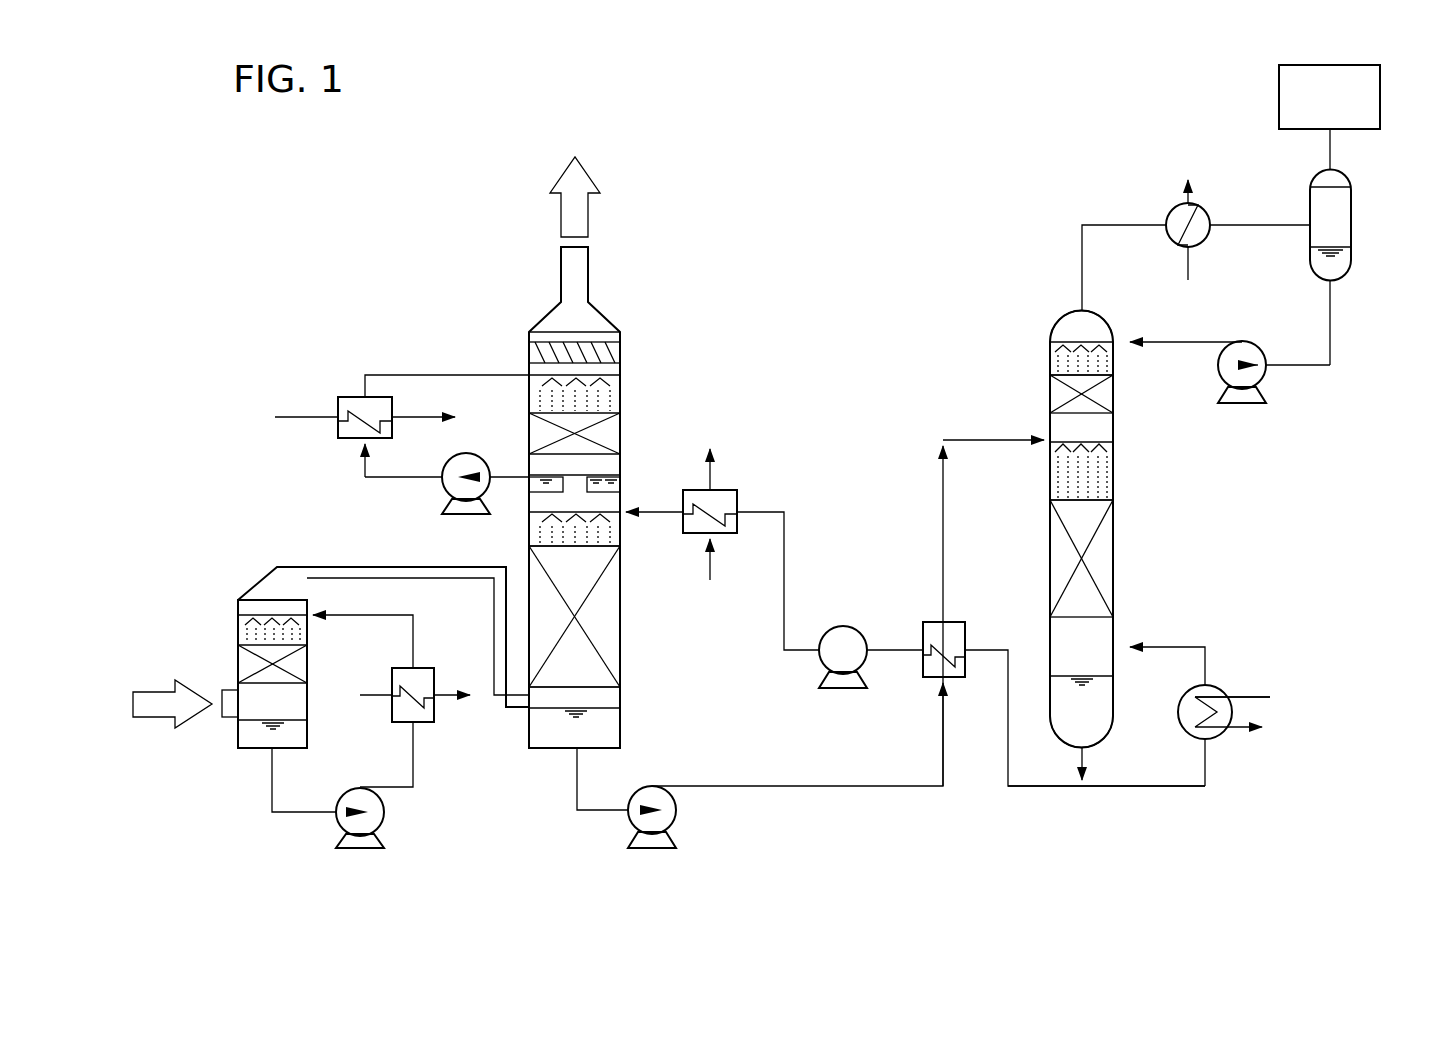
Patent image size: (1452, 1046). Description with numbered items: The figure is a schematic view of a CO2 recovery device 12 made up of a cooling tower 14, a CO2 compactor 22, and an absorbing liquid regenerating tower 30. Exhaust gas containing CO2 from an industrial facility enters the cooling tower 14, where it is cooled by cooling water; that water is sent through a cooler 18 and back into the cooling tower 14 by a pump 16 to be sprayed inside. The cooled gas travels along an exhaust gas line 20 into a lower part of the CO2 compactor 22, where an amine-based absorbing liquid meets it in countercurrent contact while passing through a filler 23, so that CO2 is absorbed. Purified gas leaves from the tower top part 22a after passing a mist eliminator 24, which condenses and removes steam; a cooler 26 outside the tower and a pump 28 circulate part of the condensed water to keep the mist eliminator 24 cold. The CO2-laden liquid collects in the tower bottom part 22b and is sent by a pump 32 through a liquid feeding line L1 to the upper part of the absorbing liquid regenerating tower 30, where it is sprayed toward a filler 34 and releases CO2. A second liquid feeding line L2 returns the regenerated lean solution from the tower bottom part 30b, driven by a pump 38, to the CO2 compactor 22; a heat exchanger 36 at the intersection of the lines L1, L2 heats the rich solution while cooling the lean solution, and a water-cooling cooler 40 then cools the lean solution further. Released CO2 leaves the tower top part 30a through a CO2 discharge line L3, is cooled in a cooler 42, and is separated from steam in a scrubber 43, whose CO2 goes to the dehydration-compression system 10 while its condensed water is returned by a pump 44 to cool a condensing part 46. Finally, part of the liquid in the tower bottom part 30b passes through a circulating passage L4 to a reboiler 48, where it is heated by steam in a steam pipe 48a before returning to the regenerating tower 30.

The dehydration-compression system 10 is at (1279, 99).
The CO2 recovery device 12 is at (757, 126).
The cooling tower 14 is at (257, 596).
The pump 16 is at (386, 812).
The cooler 18 is at (436, 716).
The exhaust gas line 20 is at (318, 565).
The CO2 compactor 22 is at (646, 452).
The tower top part 22a is at (590, 275).
The tower bottom part 22b is at (622, 731).
The filler 23 is at (622, 618).
The mist eliminator 24 is at (622, 354).
The cooler 26 is at (350, 395).
The pump 28 is at (442, 490).
The absorbing liquid regenerating tower 30 is at (1106, 502).
The tower top part 30a is at (1062, 312).
The tower bottom part 30b is at (1094, 736).
The pump 32 is at (630, 838).
The filler 34 is at (1115, 563).
The heat exchanger 36 is at (936, 619).
The pump 38 is at (840, 625).
The water-cooling cooler 40 is at (722, 488).
The cooler 42 is at (1196, 196).
The scrubber 43 is at (1353, 226).
The pump 44 is at (1267, 396).
The condensing part 46 is at (1114, 394).
The reboiler 48 is at (1210, 687).
The steam pipe 48a is at (1264, 697).
The liquid feeding line L1 is at (800, 788).
The liquid feeding line L2 is at (1005, 768).
The CO2 discharge line L3 is at (1102, 223).
The circulating passage L4 is at (1147, 790).